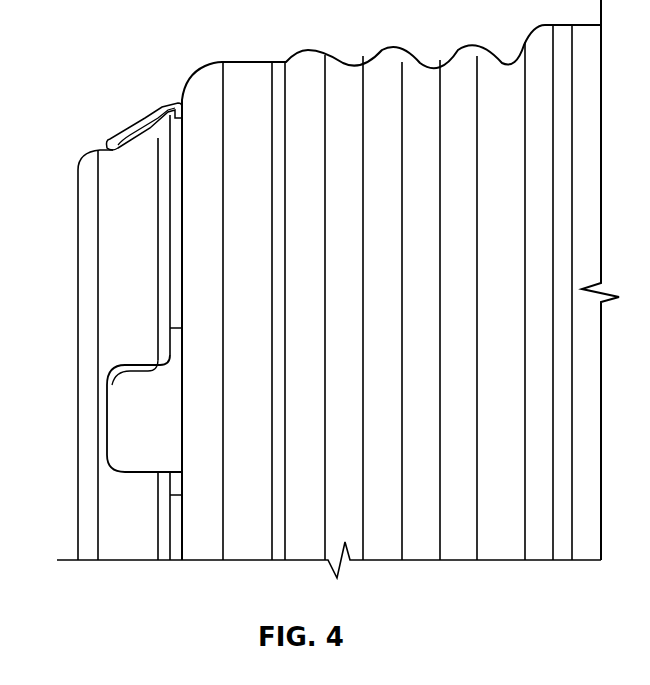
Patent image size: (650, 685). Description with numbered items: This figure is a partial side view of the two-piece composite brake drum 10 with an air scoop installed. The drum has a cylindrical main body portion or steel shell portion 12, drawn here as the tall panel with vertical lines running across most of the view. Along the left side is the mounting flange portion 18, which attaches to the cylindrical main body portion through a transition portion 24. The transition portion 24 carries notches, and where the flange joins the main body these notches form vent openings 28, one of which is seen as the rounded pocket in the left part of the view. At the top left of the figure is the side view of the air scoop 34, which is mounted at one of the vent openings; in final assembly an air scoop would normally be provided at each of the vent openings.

The brake drum 10 is at (131, 34).
The steel shell portion 12 is at (252, 548).
The mounting flange portion 18 is at (78, 537).
The transition portion 24 is at (123, 547).
The vent openings 28 is at (168, 417).
The air scoop 34 is at (157, 128).